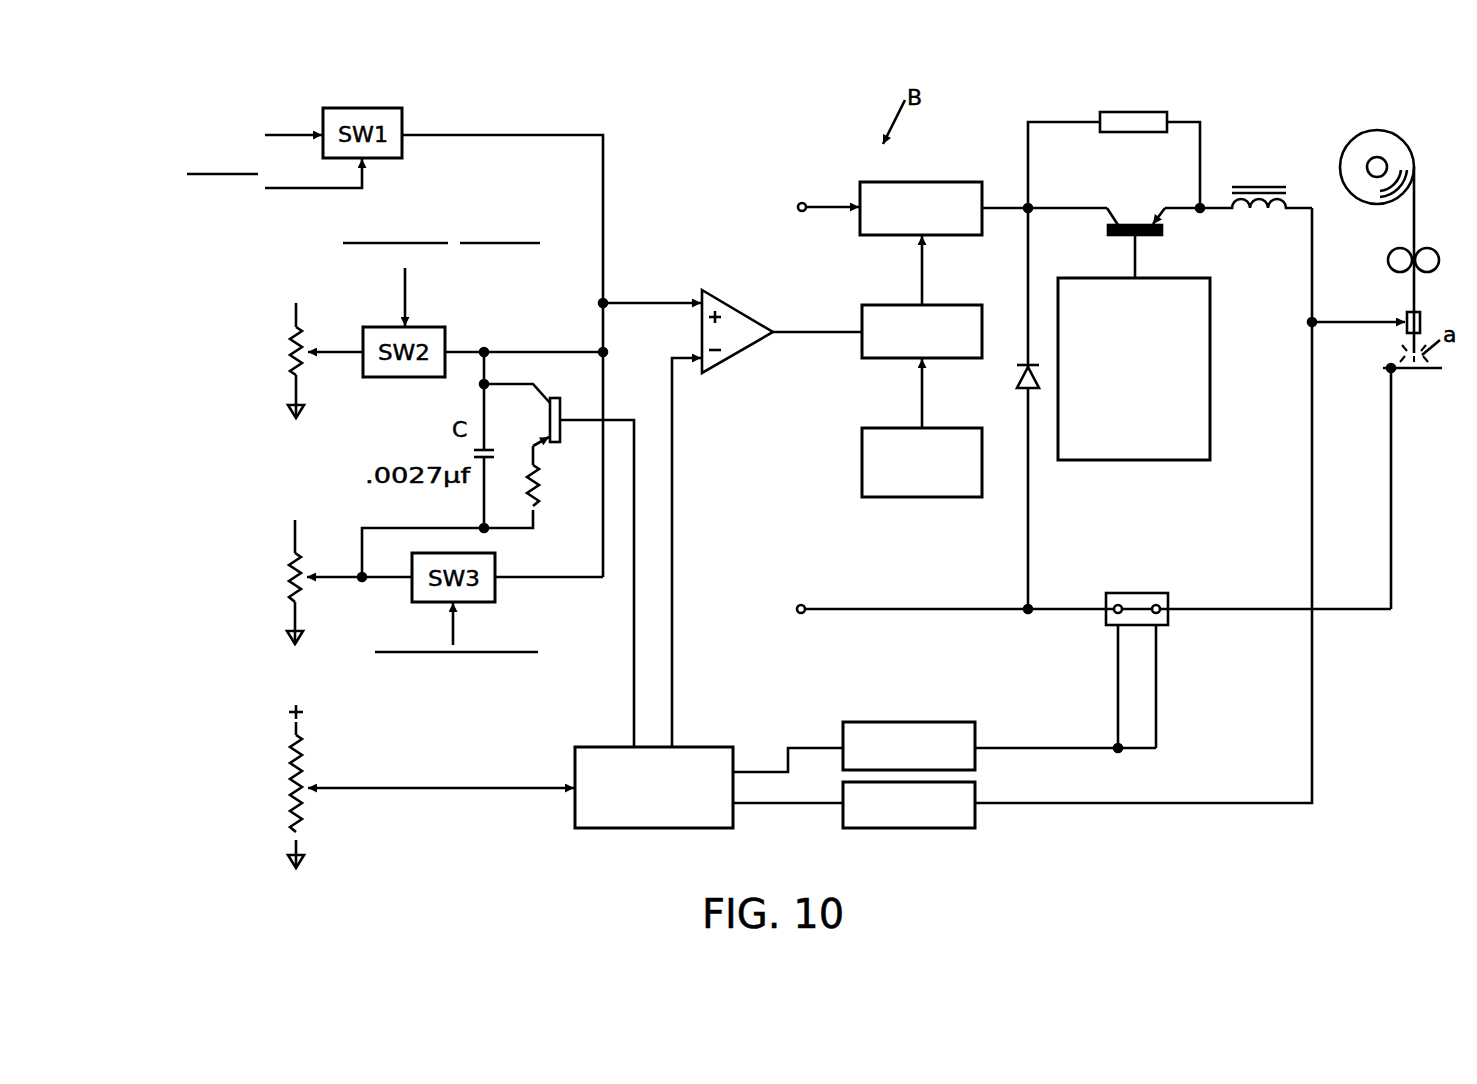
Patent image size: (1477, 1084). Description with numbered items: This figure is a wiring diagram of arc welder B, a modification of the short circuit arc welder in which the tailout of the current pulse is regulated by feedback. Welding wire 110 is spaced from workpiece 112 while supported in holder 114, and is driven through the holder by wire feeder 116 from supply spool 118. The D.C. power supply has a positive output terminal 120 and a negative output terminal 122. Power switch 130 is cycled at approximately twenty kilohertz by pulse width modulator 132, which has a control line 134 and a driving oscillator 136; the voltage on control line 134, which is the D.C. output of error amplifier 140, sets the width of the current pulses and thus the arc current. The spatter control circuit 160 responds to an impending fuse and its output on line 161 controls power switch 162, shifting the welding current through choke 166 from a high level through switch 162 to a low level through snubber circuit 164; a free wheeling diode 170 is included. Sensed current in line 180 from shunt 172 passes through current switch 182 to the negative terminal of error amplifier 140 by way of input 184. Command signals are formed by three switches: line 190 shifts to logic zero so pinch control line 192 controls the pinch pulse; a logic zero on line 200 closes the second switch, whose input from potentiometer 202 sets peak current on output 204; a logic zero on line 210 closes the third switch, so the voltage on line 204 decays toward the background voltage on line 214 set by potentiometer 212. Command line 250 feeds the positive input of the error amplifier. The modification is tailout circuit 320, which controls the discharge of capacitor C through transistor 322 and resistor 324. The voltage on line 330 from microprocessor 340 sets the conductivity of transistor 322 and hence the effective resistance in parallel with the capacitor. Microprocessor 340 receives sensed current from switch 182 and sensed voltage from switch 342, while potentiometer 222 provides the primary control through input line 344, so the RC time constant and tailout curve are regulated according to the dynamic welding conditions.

The welding wire 110 is at (1410, 306).
The workpiece 112 is at (1426, 372).
The electrical connector or holder 114 is at (1404, 331).
The wire feeder 116 is at (1395, 254).
The supply spool 118 is at (1366, 135).
The positive output terminal 120 is at (805, 200).
The negative output terminal 122 is at (805, 604).
The power switch 130 is at (873, 237).
The pulse width modulator 132 is at (876, 360).
The control line 134 is at (800, 335).
The driving oscillator 136 is at (886, 498).
The error amplifier 140 is at (735, 355).
The spatter control circuit 160 is at (1178, 462).
The output line of spatter control circuit 161 is at (1138, 262).
The power switch 162 is at (1107, 236).
The snubber circuit 164 is at (1146, 112).
The choke 166 is at (1262, 215).
The free wheeling diode 170 is at (1016, 380).
The shunt 172 is at (1148, 593).
The sensed current line 180 is at (1012, 745).
The current switch 182 is at (898, 721).
The input to error amplifier 184 is at (672, 577).
The pinch logic line 190 is at (308, 191).
The pinch control line 192 is at (283, 133).
The plasma boost logic line 200 is at (405, 292).
The peak current potentiometer 202 is at (308, 358).
The output line of switch SW2 204 is at (505, 348).
The background logic line 210 is at (457, 632).
The background current potentiometer 212 is at (306, 587).
The background voltage line 214 is at (563, 581).
The tailout potentiometer 222 is at (301, 766).
The command line 250 is at (653, 300).
The tailout or down slope circuit 320 is at (537, 373).
The transistor 322 is at (555, 397).
The resistor 324 is at (530, 502).
The control voltage line 330 is at (635, 537).
The microprocessor 340 is at (636, 830).
The voltage switch 342 is at (918, 830).
The input line 344 is at (385, 790).